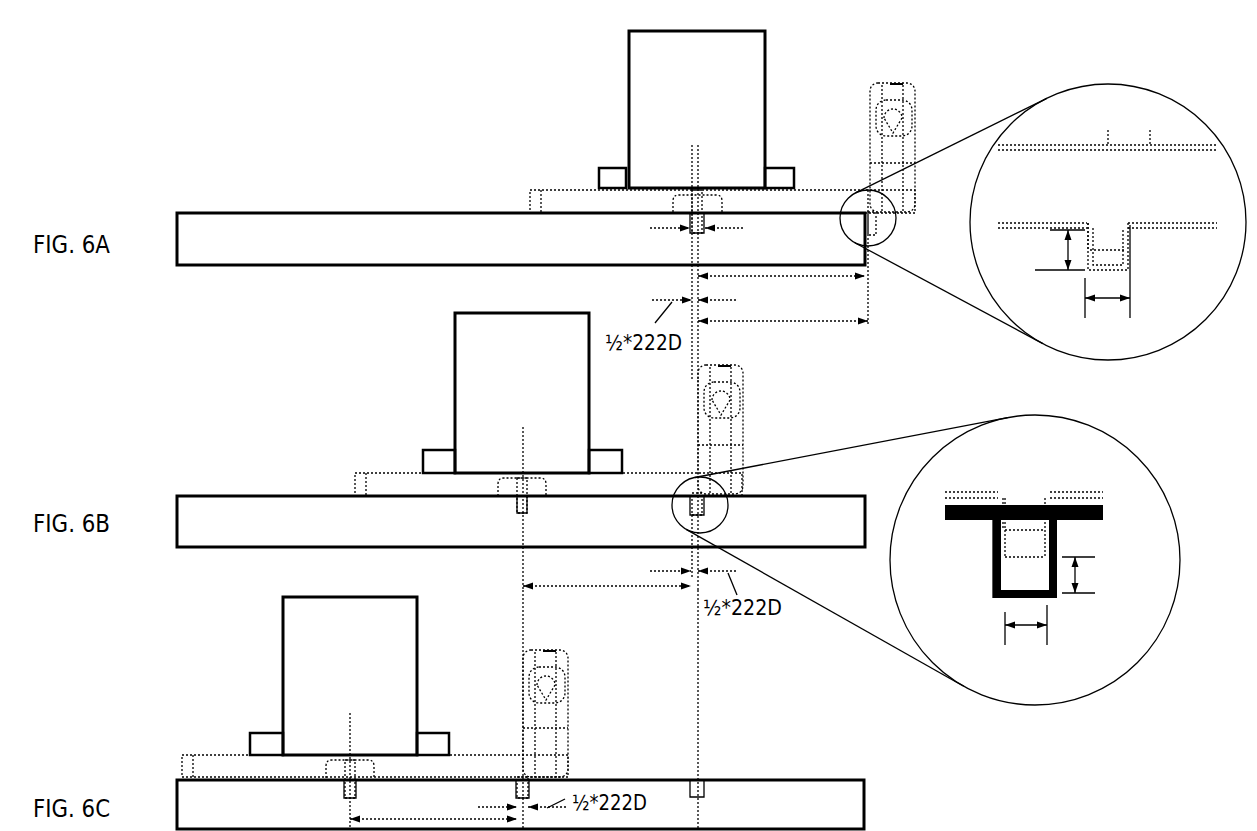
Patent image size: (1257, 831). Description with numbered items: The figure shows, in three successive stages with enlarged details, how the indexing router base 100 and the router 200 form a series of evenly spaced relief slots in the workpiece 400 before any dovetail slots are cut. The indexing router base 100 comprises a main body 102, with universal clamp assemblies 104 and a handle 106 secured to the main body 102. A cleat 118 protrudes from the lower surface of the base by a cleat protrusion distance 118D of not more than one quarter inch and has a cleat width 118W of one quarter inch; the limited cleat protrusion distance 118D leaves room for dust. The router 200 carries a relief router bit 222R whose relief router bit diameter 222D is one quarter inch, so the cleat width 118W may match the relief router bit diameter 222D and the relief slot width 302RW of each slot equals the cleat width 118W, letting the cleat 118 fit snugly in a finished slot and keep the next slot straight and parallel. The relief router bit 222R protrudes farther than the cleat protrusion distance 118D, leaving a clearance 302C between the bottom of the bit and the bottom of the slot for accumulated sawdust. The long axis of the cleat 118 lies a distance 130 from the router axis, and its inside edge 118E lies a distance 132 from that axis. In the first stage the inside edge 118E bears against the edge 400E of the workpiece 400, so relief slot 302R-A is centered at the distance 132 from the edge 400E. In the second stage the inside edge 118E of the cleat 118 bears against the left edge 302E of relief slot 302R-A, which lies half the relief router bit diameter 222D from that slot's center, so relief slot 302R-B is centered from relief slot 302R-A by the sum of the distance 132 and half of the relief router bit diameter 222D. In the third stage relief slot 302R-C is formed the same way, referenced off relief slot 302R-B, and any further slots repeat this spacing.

In FIG. 6A, the indexing router base 100 is at (935, 72).
In FIG. 6A, the main body 102 is at (531, 192).
In FIG. 6A, the universal clamp assemblies 104 is at (603, 168).
In FIG. 6A, the handle 106 is at (872, 88).
In FIG. 6A, the router 200 is at (685, 80).
In FIG. 6A, the workpiece 400 is at (233, 249).
In FIG. 6A, the relief router bit 222R is at (690, 200).
In FIG. 6A, the relief router bit diameter 222D is at (663, 232).
In FIG. 6A, the edge of the workpiece 400E is at (855, 243).
In FIG. 6A, the distance 132 is at (768, 279).
In FIG. 6B, the distance 132 is at (598, 590).
In FIG. 6C, the distance 132 is at (396, 820).
In FIG. 6A, the distance 130 is at (812, 324).
In FIG. 6A, the cleat 118 is at (1108, 240).
In FIG. 6B, the cleat 118 is at (1023, 515).
In FIG. 6A, the inside edge 118E is at (1087, 240).
In FIG. 6B, the inside edge 118E is at (985, 492).
In FIG. 6A, the cleat protrusion distance 118D is at (1065, 248).
In FIG. 6A, the cleat width 118W is at (1107, 293).
In FIG. 6B, the cleat width 118W is at (982, 591).
In FIG. 6B, the relief slot 302R-B is at (505, 513).
In FIG. 6B, the relief slot 302R-A is at (1062, 607).
In FIG. 6C, the relief slot 302R-C is at (337, 793).
In FIG. 6B, the left edge 302E is at (993, 557).
In FIG. 6B, the clearance 302C is at (1077, 577).
In FIG. 6B, the relief slot width 302RW is at (1028, 622).